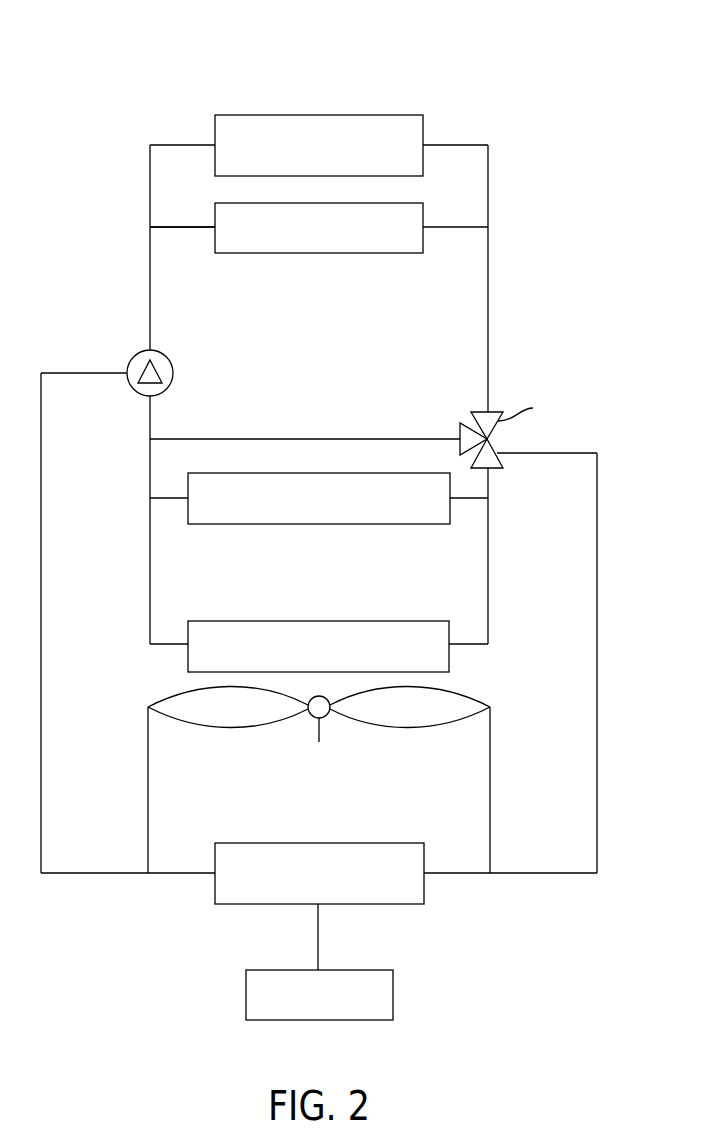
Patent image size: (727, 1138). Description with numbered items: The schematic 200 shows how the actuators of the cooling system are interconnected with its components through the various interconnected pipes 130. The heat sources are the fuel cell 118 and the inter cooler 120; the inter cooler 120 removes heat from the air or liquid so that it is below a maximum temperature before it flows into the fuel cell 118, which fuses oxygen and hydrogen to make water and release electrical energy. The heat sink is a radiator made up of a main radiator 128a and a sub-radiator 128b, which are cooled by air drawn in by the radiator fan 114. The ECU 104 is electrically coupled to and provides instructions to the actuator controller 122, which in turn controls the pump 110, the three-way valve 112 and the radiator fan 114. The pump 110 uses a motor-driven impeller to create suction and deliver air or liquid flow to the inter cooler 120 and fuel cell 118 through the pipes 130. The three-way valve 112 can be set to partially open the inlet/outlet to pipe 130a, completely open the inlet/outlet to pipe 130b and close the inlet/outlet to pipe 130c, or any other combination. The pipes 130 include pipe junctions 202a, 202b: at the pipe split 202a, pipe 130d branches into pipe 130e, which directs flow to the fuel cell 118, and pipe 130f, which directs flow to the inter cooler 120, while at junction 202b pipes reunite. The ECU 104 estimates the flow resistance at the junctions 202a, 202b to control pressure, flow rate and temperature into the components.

The interconnection schematic 200 is at (85, 72).
The fuel cell 118 is at (425, 125).
The inter cooler 120 is at (415, 254).
The pump 110 is at (134, 397).
The three-way valve 112 is at (496, 470).
The radiator fan 114 is at (410, 728).
The actuator controller 122 is at (425, 892).
The ECU 104 is at (394, 997).
The main radiator 128a is at (185, 655).
The sub-radiator 128b is at (185, 512).
The pipes 130 is at (148, 466).
The pipe 130a is at (432, 437).
The pipe 130b is at (488, 325).
The pipe 130c is at (490, 485).
The pipe 130d is at (148, 283).
The pipe 130e is at (148, 187).
The pipe 130f is at (183, 228).
The pipe junction 202a is at (148, 227).
The pipe junction 202b is at (488, 227).